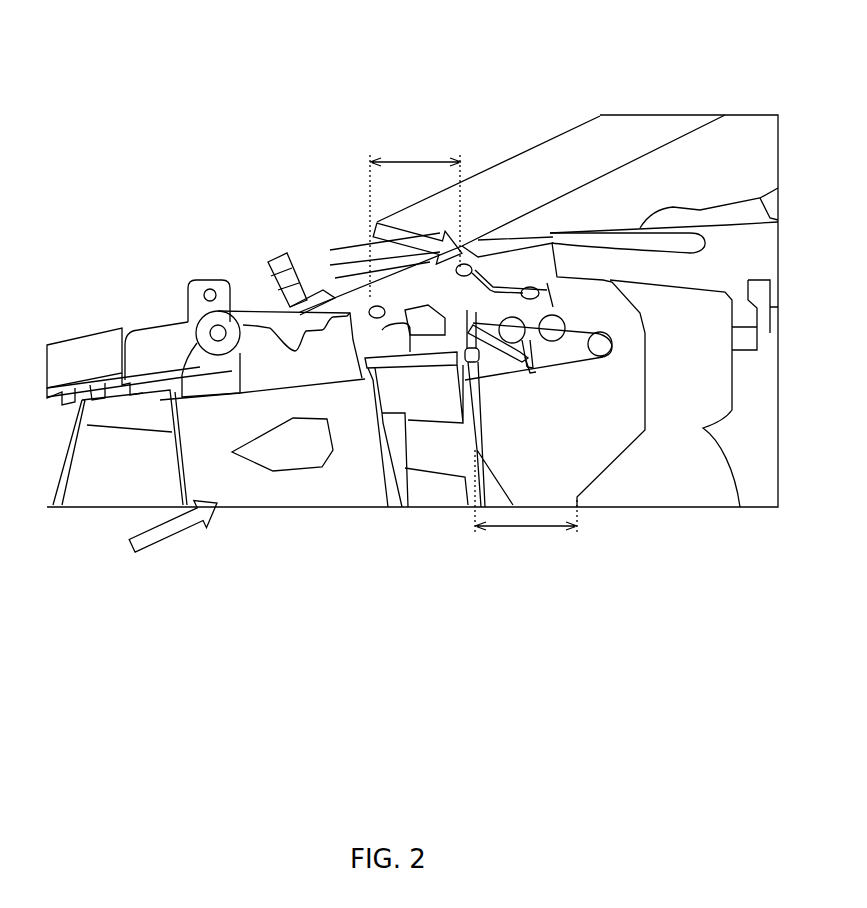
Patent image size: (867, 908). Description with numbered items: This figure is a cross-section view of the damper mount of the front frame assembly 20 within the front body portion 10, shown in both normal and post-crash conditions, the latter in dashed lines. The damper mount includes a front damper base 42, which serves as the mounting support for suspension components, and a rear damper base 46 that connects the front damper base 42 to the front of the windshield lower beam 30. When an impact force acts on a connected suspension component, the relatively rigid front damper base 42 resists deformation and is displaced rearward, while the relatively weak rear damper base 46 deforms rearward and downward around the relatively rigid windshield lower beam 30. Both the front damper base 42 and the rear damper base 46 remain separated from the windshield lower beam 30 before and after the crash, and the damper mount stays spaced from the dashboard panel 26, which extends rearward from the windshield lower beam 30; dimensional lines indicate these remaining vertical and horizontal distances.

The front body portion 10 is at (248, 98).
The front frame assembly 20 is at (225, 210).
The dashboard panel 26 is at (587, 280).
The windshield lower beam 30 is at (525, 250).
The front damper base 42 is at (150, 347).
The rear damper base 46 is at (387, 292).